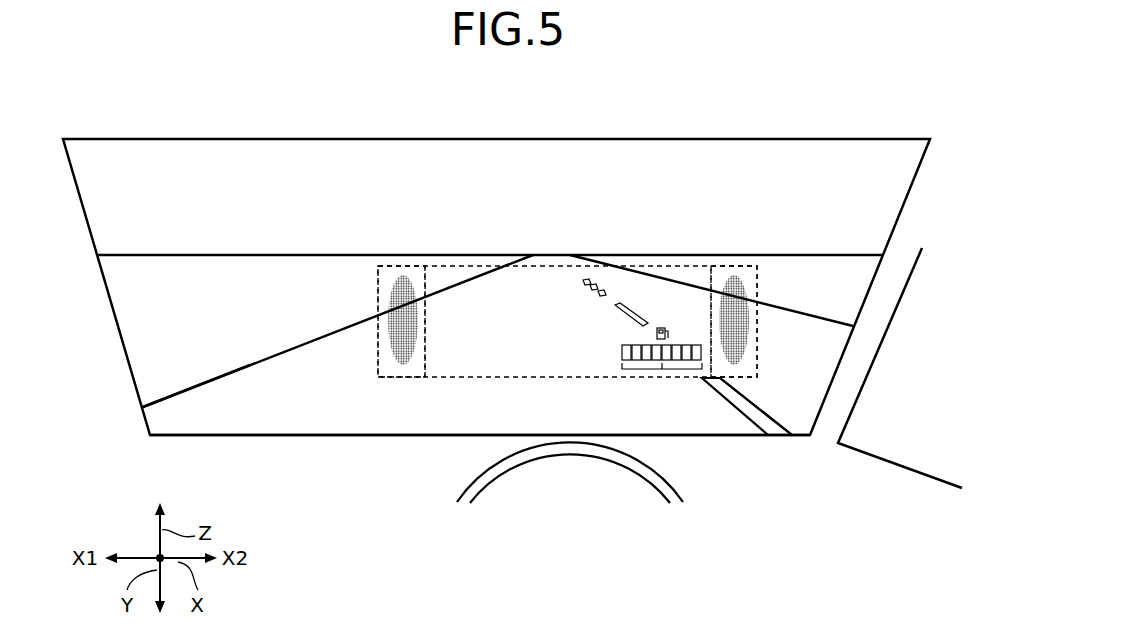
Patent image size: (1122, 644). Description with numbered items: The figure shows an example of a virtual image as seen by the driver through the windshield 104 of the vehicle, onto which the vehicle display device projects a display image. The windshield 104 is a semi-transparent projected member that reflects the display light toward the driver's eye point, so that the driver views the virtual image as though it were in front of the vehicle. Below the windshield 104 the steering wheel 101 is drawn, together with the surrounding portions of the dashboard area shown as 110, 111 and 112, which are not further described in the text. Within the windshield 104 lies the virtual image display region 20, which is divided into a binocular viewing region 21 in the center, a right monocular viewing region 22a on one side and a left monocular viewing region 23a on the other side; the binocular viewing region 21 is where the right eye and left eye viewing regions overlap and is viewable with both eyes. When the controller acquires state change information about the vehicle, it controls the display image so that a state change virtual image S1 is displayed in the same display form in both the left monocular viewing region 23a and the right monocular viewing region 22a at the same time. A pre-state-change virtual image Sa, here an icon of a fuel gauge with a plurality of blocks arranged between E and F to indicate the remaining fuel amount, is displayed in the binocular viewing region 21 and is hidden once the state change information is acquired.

The windshield 104 is at (872, 158).
The dashboard 110 is at (302, 423).
The dashboard left portion 111 is at (200, 387).
The dashboard right portion 112 is at (753, 427).
The steering wheel 101 is at (475, 481).
The virtual image display region 20 is at (660, 253).
The binocular viewing region 21 is at (455, 295).
The right monocular viewing region 22a is at (387, 275).
The left monocular viewing region 23a is at (720, 275).
The state change virtual image S1 is at (403, 367).
The pre-state-change virtual image Sa is at (621, 349).